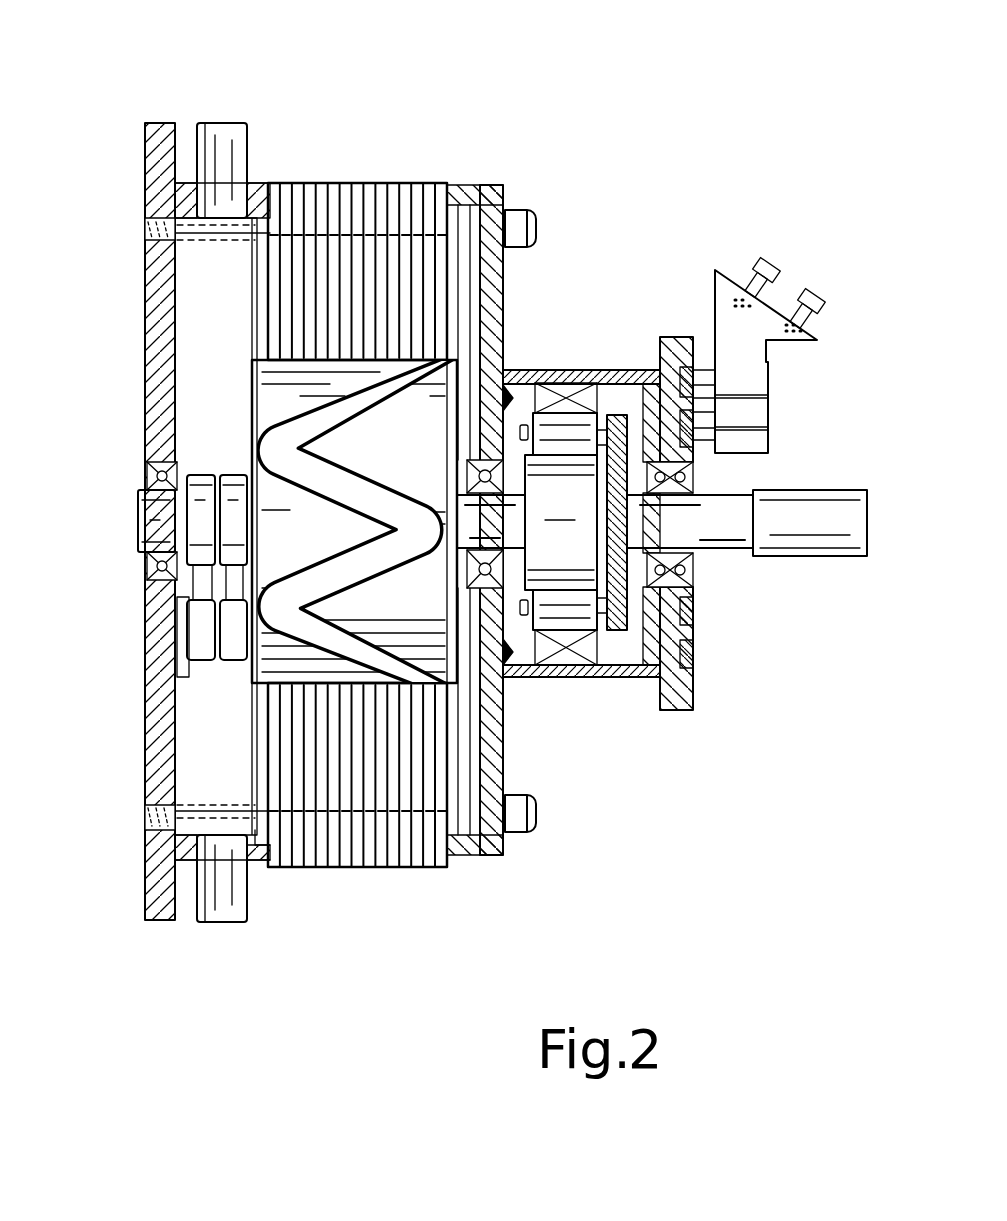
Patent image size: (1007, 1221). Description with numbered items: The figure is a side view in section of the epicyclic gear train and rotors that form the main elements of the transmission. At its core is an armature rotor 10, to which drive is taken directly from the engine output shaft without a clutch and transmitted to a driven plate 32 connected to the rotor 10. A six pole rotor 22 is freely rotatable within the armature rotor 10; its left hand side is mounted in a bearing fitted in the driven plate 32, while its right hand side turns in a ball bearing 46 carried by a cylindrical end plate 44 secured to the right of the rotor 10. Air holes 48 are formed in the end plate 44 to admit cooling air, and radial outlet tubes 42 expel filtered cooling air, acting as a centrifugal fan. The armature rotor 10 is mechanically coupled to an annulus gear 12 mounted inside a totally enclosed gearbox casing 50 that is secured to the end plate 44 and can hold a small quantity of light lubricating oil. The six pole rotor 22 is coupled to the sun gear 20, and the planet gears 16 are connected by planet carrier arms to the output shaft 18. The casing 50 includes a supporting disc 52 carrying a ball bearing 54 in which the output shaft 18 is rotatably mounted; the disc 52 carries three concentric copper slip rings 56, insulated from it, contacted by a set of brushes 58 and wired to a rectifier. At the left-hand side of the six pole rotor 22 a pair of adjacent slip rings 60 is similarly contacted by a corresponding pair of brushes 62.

The armature rotor 10 is at (361, 150).
The annulus gear 12 is at (568, 392).
The planet gears 16 is at (592, 425).
The output shaft 18 is at (808, 495).
The sun gear 20 is at (513, 578).
The six pole rotor 22 is at (215, 417).
The driven plate 32 is at (152, 300).
The radial outlet tubes 42 is at (250, 126).
The cylindrical end plate 44 is at (496, 186).
The ball bearing 46 is at (485, 460).
The air holes 48 is at (462, 222).
The gearbox casing 50 is at (617, 680).
The supporting disc 52 is at (683, 710).
The ball bearing 54 is at (696, 585).
The slip rings 56 is at (702, 642).
The brushes 58 is at (770, 386).
The slip rings 60 is at (205, 478).
The brushes 62 is at (200, 633).